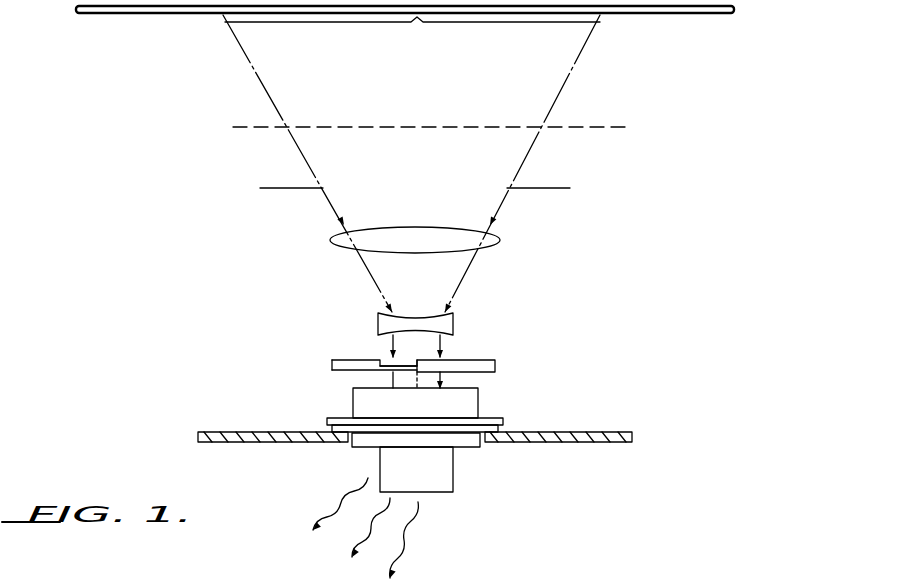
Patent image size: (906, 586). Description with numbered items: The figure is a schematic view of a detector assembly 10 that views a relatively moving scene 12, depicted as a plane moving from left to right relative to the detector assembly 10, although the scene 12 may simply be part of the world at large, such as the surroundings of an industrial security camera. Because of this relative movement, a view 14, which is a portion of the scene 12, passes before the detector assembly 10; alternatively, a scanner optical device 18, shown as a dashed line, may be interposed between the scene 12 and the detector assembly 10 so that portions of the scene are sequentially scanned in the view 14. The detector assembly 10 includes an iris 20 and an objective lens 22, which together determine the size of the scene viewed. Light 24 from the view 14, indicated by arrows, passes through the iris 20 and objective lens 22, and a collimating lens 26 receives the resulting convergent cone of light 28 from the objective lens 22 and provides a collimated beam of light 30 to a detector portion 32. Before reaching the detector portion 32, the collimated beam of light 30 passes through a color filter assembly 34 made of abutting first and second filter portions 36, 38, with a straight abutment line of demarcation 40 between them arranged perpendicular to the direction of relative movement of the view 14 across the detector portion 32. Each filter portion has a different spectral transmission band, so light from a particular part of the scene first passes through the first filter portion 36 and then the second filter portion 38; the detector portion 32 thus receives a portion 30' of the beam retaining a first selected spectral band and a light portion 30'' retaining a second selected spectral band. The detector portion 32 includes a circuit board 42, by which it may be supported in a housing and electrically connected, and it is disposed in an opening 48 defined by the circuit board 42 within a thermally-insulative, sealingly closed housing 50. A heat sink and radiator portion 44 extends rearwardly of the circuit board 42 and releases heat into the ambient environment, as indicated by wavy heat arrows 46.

The detector assembly 10 is at (592, 298).
The scene 12 is at (637, 15).
The view 14 is at (412, 38).
The scanner optical device 18 is at (590, 124).
The iris 20 is at (553, 190).
The objective lens 22 is at (377, 249).
The light 24 is at (298, 147).
The collimating lens 26 is at (378, 317).
The convergent cone of light 28 is at (466, 278).
The collimated beam of light 30 is at (448, 339).
The portion of the collimated light beam 30' is at (340, 384).
The light portion 30'' is at (443, 394).
The detector portion 32 is at (483, 398).
The color filter assembly 34 is at (330, 355).
The first filter portion 36 is at (332, 362).
The second filter portion 38 is at (496, 361).
The abutment line of demarcation 40 is at (383, 364).
The circuit board 42 is at (580, 432).
The heat sink and radiator portion 44 is at (452, 484).
The wavy heat arrows 46 is at (377, 518).
The opening 48 is at (475, 443).
The housing 50 is at (356, 407).